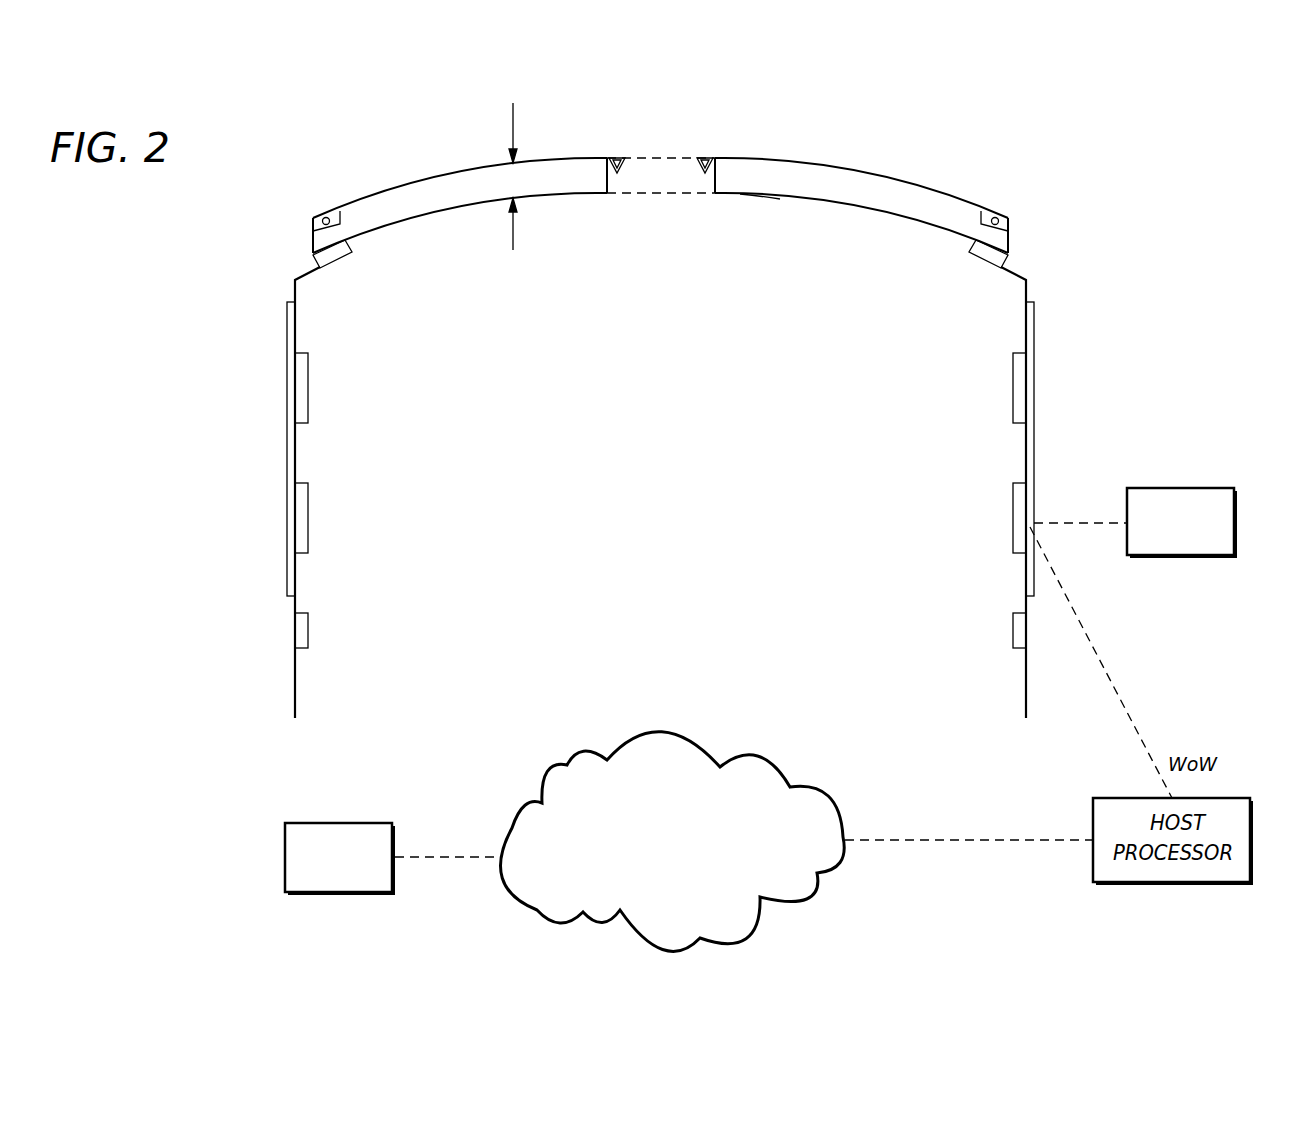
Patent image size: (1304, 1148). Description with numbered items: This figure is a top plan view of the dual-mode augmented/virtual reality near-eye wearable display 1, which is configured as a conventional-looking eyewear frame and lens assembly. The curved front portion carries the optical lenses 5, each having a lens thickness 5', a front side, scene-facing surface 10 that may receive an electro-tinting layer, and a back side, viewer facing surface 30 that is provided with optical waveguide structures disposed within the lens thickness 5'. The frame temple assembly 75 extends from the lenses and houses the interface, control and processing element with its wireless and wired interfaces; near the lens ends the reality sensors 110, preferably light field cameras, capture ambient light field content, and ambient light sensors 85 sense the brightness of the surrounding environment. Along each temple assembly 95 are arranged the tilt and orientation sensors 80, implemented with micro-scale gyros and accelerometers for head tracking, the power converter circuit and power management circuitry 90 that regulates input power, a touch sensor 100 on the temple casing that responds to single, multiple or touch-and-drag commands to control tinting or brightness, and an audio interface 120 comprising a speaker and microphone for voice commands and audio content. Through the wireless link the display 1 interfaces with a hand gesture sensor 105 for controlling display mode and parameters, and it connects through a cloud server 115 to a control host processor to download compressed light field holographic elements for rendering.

The near-eye wearable display 1 is at (880, 120).
The optical lens 5 is at (660, 190).
The lens thickness 5' is at (501, 162).
The front side, scene-facing surface 10 is at (803, 137).
The back side, viewer facing surface 30 is at (757, 197).
The frame temple assembly 75 is at (652, 170).
The tilt and orientation sensors 80 is at (290, 385).
The ambient light sensors 85 is at (617, 157).
The power converter circuit and power management circuitry 90 is at (290, 524).
The temple assembly 95 is at (330, 444).
The touch sensor 100 is at (290, 453).
The hand gesture sensor 105 is at (1135, 523).
The reality sensor 110 is at (323, 214).
The cloud server 115 is at (391, 859).
The audio interface 120 is at (294, 630).